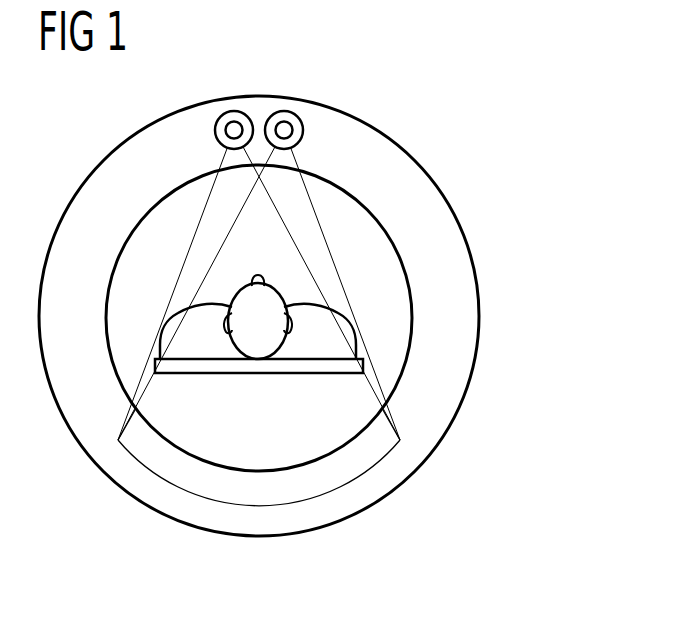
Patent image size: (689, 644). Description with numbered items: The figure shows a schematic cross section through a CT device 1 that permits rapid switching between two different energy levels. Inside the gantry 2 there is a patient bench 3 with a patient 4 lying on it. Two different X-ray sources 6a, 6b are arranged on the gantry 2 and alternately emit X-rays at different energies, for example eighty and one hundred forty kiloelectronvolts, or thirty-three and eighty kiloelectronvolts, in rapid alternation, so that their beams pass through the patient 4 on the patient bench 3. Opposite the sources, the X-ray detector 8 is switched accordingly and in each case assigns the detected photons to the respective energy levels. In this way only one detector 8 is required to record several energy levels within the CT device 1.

The CT device 1 is at (558, 160).
The gantry 2 is at (453, 253).
The patient bench 3 is at (363, 367).
The patient 4 is at (356, 346).
The X-ray source 6a is at (234, 111).
The X-ray source 6b is at (285, 111).
The X-ray detector 8 is at (260, 490).